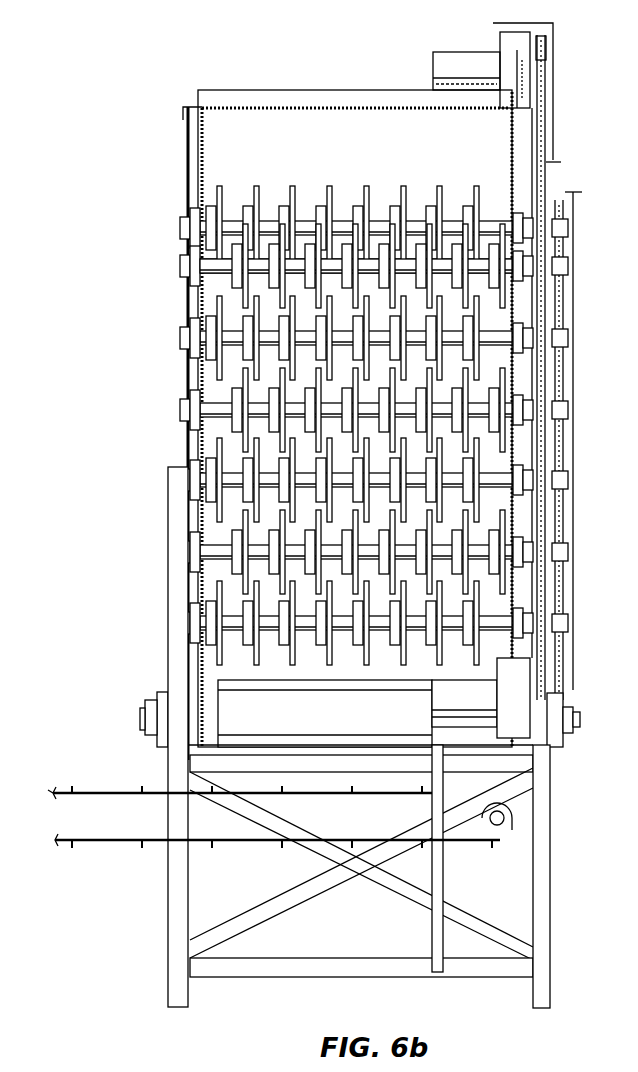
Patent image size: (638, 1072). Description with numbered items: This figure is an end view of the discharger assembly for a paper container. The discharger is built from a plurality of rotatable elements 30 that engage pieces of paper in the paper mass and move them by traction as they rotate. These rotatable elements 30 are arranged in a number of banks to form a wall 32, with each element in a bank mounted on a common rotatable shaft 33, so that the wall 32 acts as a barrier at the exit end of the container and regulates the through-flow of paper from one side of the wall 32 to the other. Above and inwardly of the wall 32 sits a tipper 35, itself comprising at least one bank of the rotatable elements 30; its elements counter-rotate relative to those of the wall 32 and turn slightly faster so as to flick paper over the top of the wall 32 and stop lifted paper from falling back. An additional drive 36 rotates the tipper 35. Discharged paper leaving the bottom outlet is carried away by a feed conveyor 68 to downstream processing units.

The rotatable elements 30 is at (255, 188).
The wall 32 is at (218, 430).
The common rotatable shaft 33 is at (503, 210).
The tipper 35 is at (334, 394).
The additional drive 36 is at (510, 50).
The feed conveyor 68 is at (93, 792).